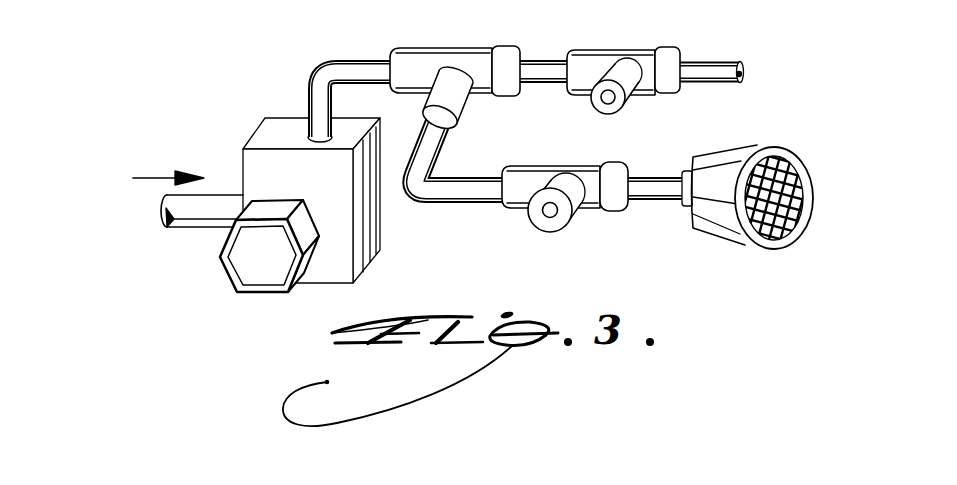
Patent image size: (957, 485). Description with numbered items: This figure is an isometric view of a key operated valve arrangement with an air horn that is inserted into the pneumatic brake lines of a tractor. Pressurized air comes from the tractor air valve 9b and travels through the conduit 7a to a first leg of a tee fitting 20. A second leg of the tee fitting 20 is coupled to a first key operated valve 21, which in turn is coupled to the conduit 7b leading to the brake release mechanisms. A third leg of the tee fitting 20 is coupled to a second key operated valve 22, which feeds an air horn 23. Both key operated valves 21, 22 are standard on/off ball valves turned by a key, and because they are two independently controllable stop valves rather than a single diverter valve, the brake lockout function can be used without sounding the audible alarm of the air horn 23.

The conduit 7a is at (322, 67).
The conduit 7b is at (718, 63).
The tractor air valve 9b is at (302, 120).
The tee fitting 20 is at (458, 60).
The first key operated valve 21 is at (620, 55).
The second key operated valve 22 is at (510, 213).
The air horn 23 is at (714, 221).